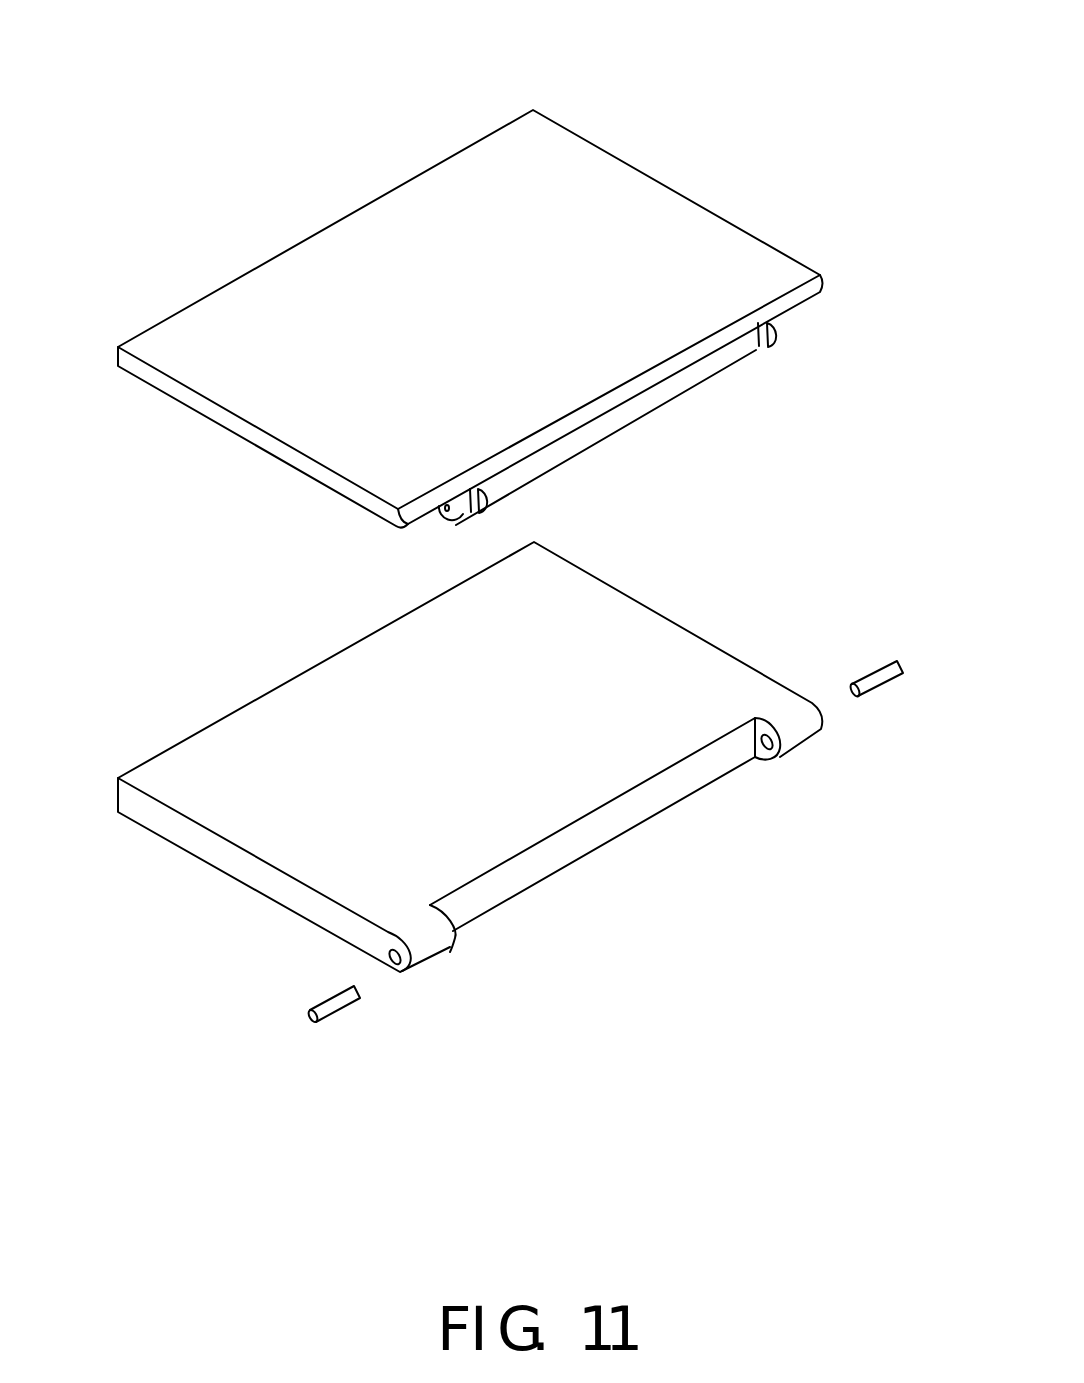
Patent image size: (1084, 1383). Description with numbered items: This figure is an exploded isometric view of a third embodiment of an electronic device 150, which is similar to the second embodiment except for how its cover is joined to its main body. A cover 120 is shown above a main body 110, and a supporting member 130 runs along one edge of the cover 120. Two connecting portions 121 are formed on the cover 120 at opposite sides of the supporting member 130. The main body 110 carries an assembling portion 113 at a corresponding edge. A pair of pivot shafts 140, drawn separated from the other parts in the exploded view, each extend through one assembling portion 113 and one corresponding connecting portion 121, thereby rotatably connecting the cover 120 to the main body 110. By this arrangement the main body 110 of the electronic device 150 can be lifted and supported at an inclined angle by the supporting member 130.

The electronic device 150 is at (537, 34).
The cover 120 is at (650, 215).
The connecting portion 121 is at (771, 337).
The supporting member 130 is at (638, 405).
The main body 110 is at (470, 808).
The assembling portion 113 is at (435, 940).
The pivot shaft 140 is at (328, 1012).